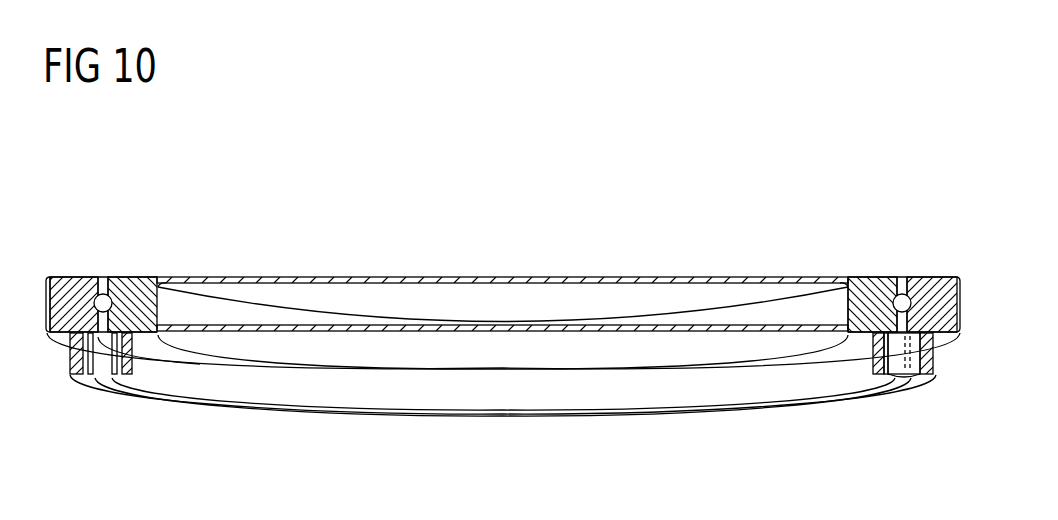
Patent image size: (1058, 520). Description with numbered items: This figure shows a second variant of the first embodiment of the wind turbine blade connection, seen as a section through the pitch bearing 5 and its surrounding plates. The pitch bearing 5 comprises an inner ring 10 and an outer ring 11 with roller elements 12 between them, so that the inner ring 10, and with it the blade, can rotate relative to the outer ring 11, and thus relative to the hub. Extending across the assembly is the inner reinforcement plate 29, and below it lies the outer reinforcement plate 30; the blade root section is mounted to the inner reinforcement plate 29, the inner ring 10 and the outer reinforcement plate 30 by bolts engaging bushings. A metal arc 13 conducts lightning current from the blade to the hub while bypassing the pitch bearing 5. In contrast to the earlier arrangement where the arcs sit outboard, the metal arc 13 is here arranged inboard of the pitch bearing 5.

The pitch bearing 5 is at (897, 285).
The inner ring 10 is at (862, 278).
The outer ring 11 is at (925, 278).
The roller elements 12 is at (888, 278).
The metal arc 13 is at (900, 362).
The inner reinforcement plate 29 is at (397, 278).
The outer reinforcement plate 30 is at (430, 333).